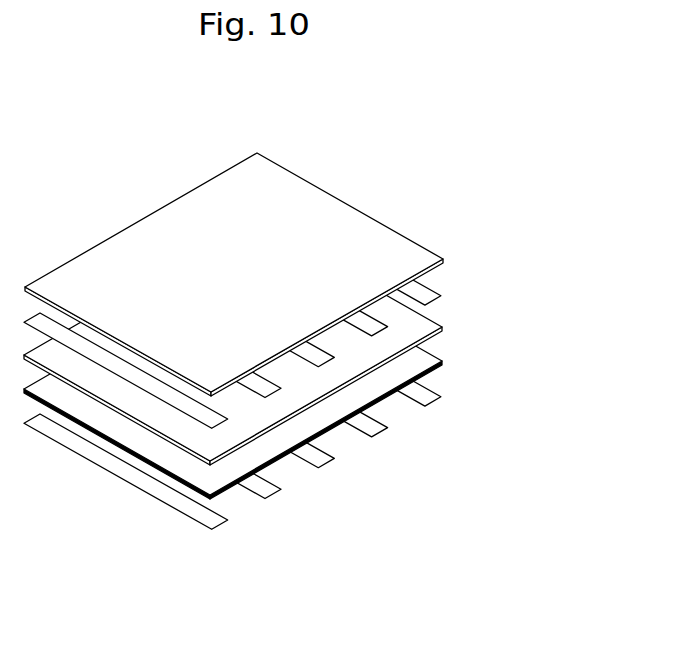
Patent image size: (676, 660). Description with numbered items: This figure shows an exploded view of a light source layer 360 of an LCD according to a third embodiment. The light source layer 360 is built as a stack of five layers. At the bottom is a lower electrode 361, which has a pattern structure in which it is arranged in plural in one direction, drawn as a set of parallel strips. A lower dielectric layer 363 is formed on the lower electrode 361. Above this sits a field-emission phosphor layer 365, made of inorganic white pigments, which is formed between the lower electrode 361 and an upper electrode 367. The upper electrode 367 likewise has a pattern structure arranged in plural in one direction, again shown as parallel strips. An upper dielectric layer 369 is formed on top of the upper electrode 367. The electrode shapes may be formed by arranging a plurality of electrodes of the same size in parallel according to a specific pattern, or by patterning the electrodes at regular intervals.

The light source layer 360 is at (100, 185).
The lower electrode 361 is at (438, 403).
The lower dielectric layer 363 is at (438, 370).
The field-emission phosphor layer 365 is at (438, 337).
The upper electrode 367 is at (438, 300).
The upper dielectric layer 369 is at (438, 267).